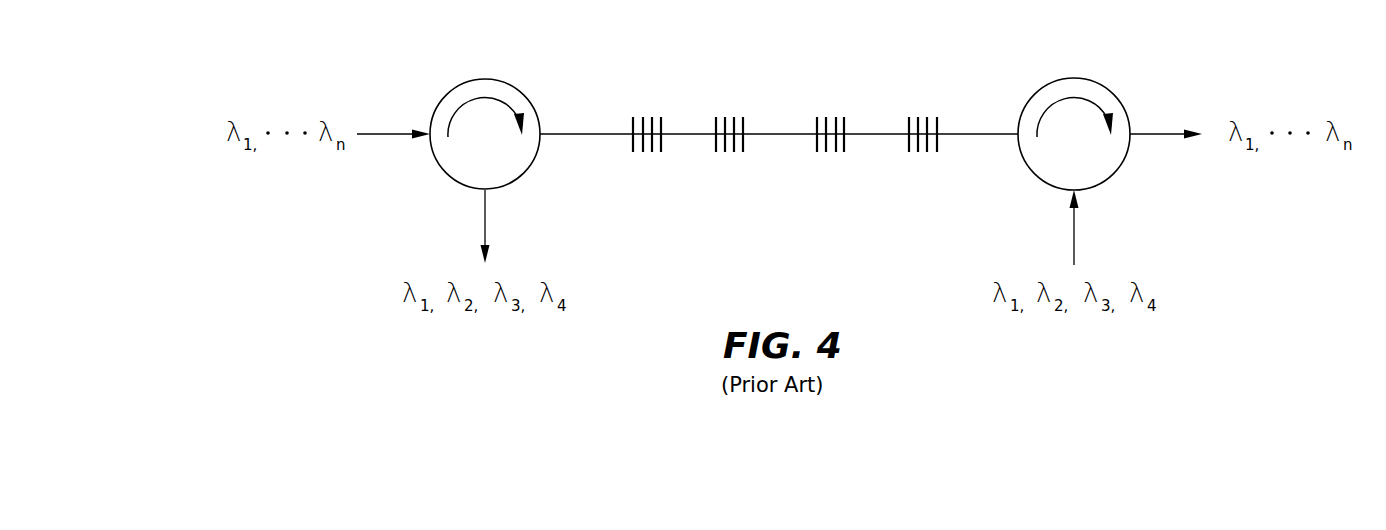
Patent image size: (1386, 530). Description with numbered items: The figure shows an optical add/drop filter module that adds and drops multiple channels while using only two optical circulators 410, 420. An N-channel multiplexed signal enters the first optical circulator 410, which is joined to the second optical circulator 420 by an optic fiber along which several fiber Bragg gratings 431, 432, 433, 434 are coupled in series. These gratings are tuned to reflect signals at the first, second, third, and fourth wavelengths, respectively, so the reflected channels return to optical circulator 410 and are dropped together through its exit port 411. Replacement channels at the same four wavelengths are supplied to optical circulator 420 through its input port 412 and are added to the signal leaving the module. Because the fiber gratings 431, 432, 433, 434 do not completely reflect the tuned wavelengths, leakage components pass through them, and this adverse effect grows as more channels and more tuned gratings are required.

The optical circulator 410 is at (485, 79).
The exit port 411 is at (486, 192).
The input port 412 is at (1076, 192).
The optical circulator 420 is at (1074, 78).
The fiber Bragg grating 431 is at (647, 111).
The fiber Bragg grating 432 is at (730, 111).
The fiber Bragg grating 433 is at (831, 111).
The fiber Bragg grating 434 is at (923, 111).